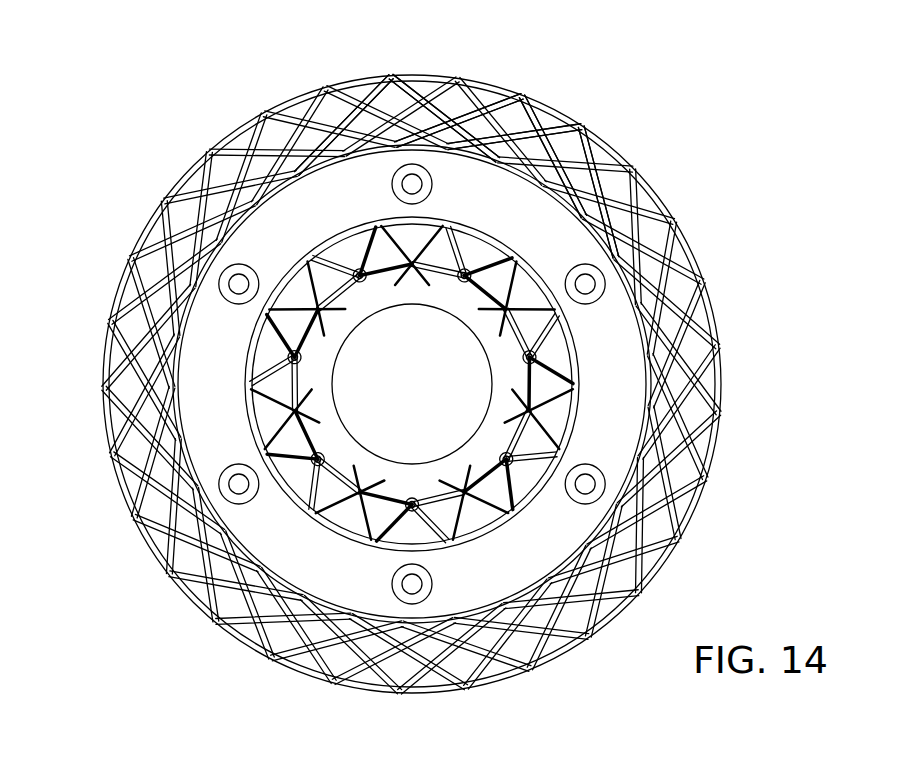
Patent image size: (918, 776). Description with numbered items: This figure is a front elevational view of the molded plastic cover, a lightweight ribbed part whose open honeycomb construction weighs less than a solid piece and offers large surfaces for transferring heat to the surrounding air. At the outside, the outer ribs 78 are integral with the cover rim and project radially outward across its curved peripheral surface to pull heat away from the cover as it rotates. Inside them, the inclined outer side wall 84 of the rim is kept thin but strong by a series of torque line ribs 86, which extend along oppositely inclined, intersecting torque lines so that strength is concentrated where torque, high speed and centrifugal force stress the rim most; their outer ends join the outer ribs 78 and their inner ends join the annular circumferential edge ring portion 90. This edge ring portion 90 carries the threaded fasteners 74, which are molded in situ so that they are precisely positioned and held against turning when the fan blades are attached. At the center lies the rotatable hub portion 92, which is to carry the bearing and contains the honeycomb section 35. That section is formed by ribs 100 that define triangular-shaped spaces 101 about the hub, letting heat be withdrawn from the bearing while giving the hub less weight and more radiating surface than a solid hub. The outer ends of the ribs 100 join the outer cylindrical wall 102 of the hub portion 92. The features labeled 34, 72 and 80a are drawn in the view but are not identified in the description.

The rotor disc 34 is at (256, 108).
The honeycomb section 35 is at (480, 254).
The mounting hole 72 is at (422, 190).
The threaded fasteners 74 is at (232, 293).
The outer ribs 78 is at (318, 87).
The inner rail of outer lattice 80a is at (148, 228).
The inclined outer side wall 84 is at (497, 105).
The torque line ribs 86 is at (378, 80).
The circumferential edge ring portion 90 is at (563, 252).
The central rotatable hub portion 92 is at (523, 505).
The ribs 100 is at (359, 232).
The triangular-shaped spaces 101 is at (290, 295).
The outer cylindrical wall 102 is at (577, 420).